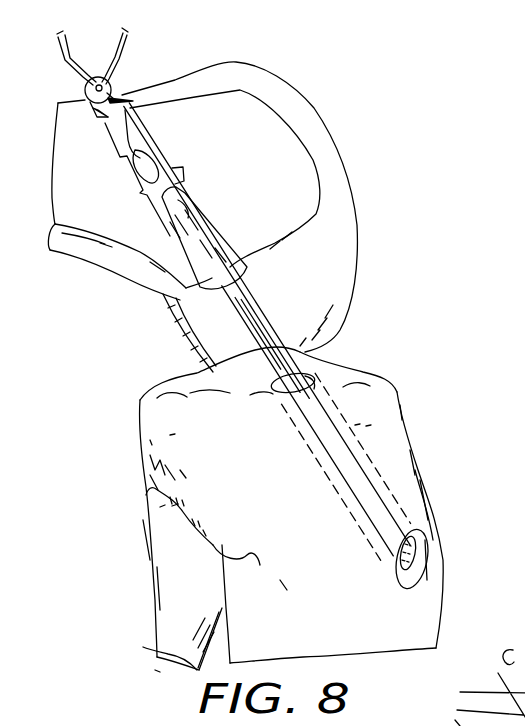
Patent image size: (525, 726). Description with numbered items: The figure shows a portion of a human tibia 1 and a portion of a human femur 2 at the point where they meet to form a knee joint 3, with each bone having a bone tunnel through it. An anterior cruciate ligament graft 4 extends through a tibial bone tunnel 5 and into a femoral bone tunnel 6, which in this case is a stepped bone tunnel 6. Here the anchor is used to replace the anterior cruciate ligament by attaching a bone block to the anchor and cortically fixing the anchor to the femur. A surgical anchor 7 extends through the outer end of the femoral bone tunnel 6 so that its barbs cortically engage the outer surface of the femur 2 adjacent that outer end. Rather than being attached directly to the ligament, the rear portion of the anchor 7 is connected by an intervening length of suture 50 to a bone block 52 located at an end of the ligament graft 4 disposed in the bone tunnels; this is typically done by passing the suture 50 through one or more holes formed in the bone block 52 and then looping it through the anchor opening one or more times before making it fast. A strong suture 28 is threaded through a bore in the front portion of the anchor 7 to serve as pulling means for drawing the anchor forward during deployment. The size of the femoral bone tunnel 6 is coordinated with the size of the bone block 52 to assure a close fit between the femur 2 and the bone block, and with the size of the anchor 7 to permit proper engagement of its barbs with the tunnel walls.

The tibia 1 is at (458, 546).
The femur 2 is at (61, 265).
The knee joint 3 is at (368, 345).
The anterior cruciate ligament graft 4 is at (266, 316).
The tibial bone tunnel 5 is at (328, 488).
The femoral bone tunnel 6 is at (181, 178).
The surgical anchor 7 is at (116, 81).
The suture 28 is at (120, 38).
The suture 50 is at (160, 172).
The bone block 52 is at (182, 258).